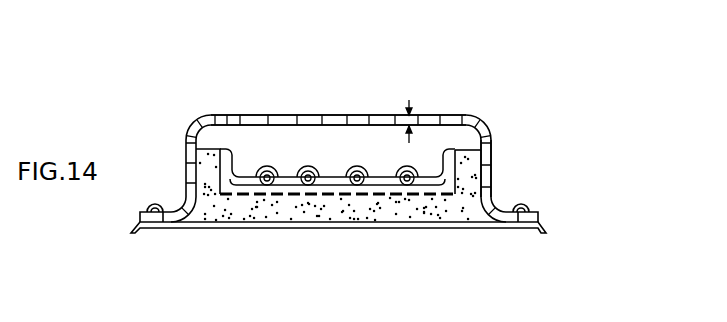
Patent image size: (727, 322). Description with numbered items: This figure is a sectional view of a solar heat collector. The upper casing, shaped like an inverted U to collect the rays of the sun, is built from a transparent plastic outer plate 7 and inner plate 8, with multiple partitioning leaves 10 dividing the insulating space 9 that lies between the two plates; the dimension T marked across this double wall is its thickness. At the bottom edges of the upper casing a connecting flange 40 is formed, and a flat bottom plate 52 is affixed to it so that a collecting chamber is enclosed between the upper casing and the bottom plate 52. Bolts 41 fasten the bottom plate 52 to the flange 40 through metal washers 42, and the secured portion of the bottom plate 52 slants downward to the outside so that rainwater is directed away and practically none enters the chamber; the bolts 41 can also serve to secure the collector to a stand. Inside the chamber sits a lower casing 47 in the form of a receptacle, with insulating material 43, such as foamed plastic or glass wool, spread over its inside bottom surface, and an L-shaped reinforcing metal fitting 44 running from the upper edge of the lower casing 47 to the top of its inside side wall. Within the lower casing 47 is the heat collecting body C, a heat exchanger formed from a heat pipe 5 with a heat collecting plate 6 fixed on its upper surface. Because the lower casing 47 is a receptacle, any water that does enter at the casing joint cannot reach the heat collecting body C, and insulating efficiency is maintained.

The heat pipe 5 is at (268, 188).
The heat collecting plate 6 is at (295, 180).
The outer plate 7 is at (255, 116).
The inner plate 8 is at (227, 117).
The insulating space 9 is at (440, 117).
The partitioning leaves 10 is at (300, 116).
The connecting flange 40 is at (174, 216).
The bolts 41 is at (521, 208).
The metal washers 42 is at (538, 212).
The insulating material 43 is at (455, 196).
The L-shaped reinforcing metal fitting 44 is at (465, 150).
The lower casing 47 is at (392, 212).
The bottom plate 52 is at (337, 233).
The heat collecting body (heat exchanger) C is at (338, 167).
The thickness T is at (416, 118).